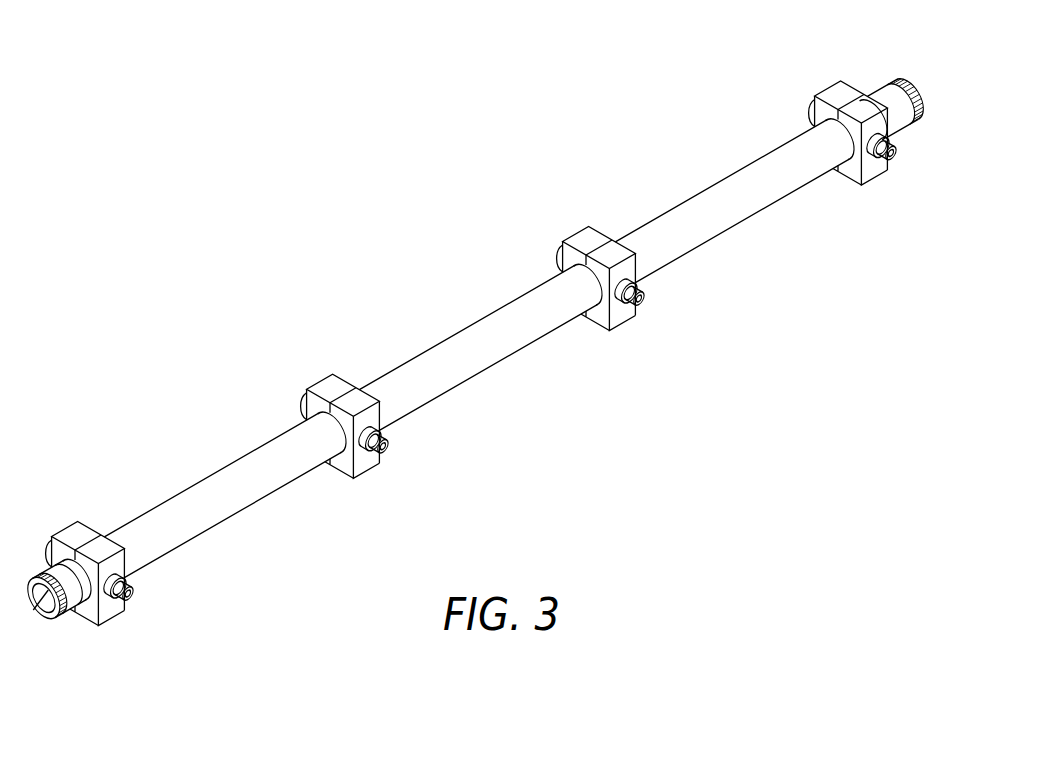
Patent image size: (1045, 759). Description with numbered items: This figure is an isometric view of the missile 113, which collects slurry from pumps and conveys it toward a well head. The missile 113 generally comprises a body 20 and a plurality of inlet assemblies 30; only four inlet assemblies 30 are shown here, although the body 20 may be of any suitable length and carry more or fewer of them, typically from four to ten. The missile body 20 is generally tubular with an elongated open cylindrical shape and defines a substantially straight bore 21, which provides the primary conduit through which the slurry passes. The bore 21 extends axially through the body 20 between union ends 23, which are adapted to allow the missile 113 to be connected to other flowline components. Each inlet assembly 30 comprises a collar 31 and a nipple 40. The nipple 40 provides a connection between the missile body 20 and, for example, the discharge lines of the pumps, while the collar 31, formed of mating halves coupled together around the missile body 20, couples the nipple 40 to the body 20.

The missile 113 is at (112, 358).
The missile body 20 is at (212, 519).
The bore 21 is at (42, 603).
The union ends 23 is at (58, 613).
The inlet assembly 30 is at (83, 534).
The collar 31 is at (92, 610).
The nipple 40 is at (134, 592).